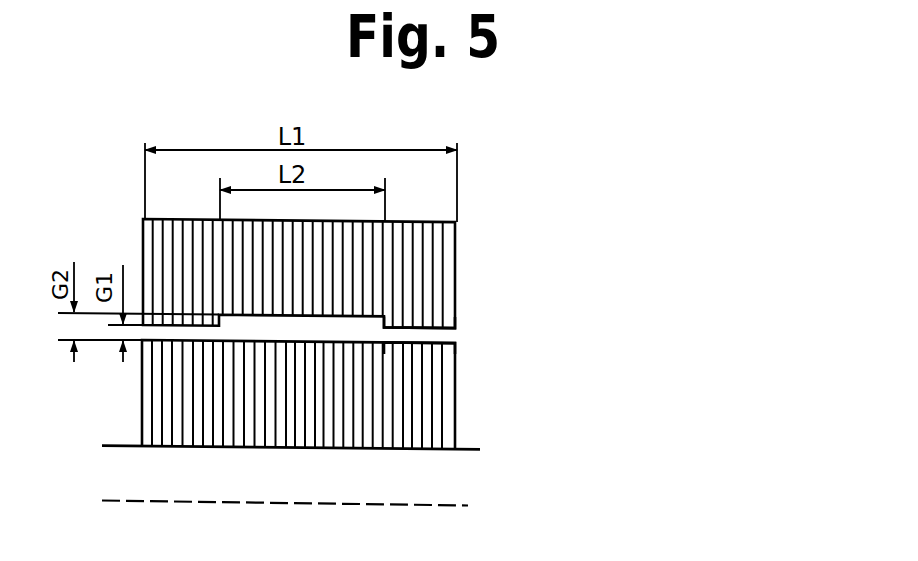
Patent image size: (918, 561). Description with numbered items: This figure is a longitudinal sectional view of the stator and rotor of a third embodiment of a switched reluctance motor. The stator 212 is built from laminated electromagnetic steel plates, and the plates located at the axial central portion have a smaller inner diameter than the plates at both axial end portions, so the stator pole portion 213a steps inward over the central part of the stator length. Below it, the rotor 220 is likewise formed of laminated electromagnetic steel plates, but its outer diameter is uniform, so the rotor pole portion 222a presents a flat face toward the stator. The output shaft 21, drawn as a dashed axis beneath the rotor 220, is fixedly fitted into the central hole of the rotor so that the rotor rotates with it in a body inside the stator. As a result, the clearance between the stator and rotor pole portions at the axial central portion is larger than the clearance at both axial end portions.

The stator 212 is at (420, 252).
The stator pole portion 213a is at (440, 320).
The rotor pole portion 222a is at (440, 362).
The rotor 220 is at (435, 428).
The output shaft 21 is at (435, 483).